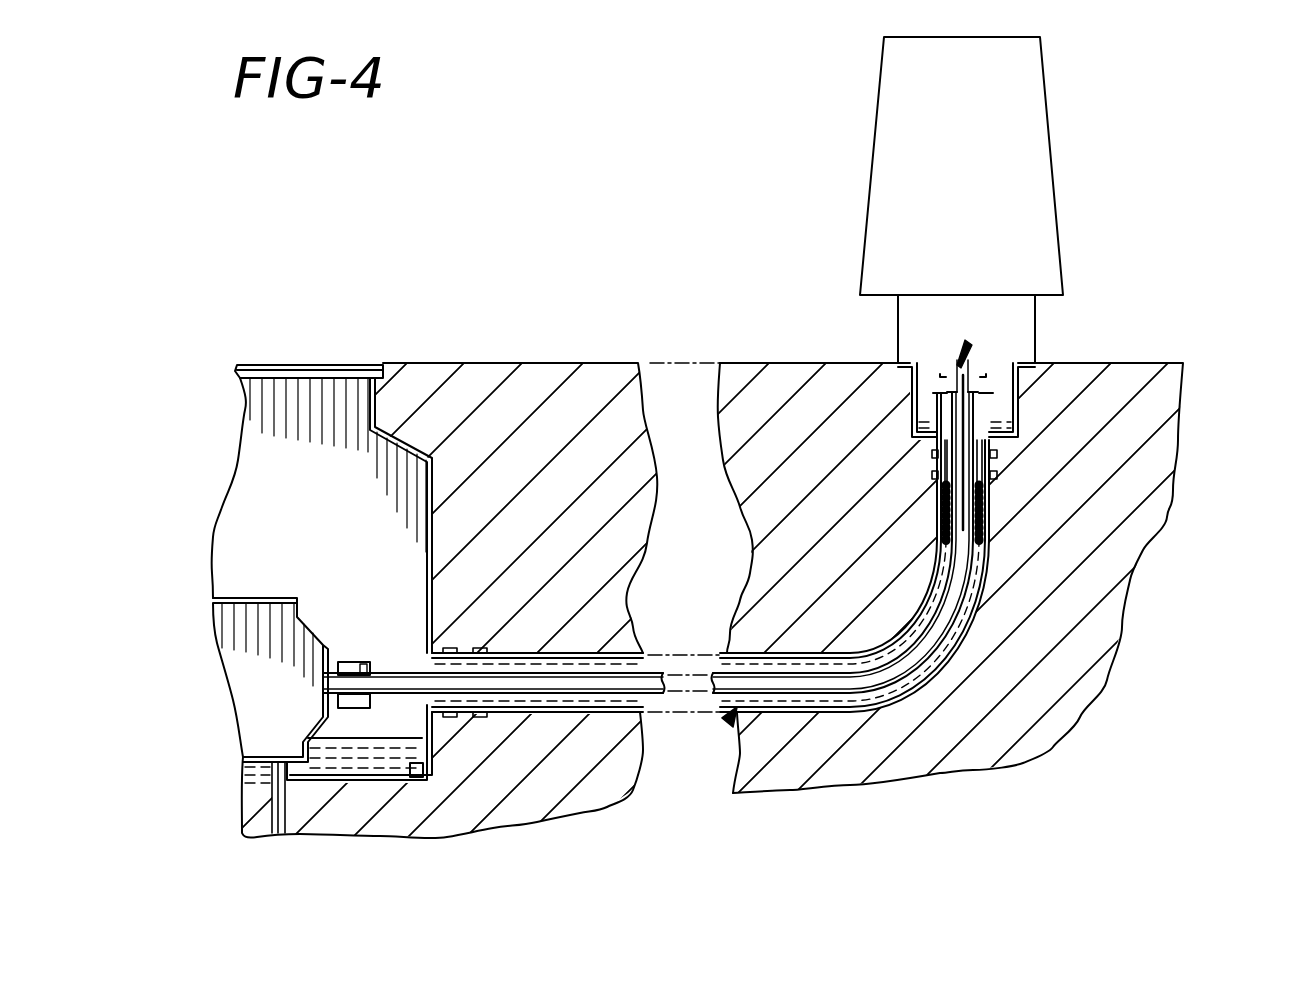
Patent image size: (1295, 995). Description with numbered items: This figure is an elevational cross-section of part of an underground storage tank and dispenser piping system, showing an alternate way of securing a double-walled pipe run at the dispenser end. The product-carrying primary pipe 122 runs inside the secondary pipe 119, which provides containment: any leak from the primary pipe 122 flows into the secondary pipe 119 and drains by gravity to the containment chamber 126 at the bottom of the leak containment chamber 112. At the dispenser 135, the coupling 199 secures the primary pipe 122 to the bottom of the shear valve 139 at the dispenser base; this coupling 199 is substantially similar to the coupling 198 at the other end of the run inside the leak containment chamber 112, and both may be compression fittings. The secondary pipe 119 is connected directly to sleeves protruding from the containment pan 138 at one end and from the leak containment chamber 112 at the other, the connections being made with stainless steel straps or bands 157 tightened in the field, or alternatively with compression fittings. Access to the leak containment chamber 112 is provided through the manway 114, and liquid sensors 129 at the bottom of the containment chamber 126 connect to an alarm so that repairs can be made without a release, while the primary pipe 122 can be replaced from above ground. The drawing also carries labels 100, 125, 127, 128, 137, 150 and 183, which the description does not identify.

The tube assembly 100 is at (836, 720).
The leak containment chamber 112 is at (427, 462).
The manway 114 is at (313, 362).
The secondary pipe 119 is at (1017, 550).
The primary pipe 122 is at (943, 660).
The fitting 125 is at (341, 660).
The containment chamber 126 is at (380, 763).
The fluid flow arrow 127 is at (728, 728).
The body block 128 is at (598, 363).
The liquid sensors 129 is at (427, 777).
The dispenser 135 is at (1035, 155).
The housing 137 is at (233, 598).
The containment pan 138 is at (905, 385).
The shear valve 139 is at (968, 343).
The fluid 150 is at (345, 740).
The stainless steel straps or bands 157 is at (483, 717).
The drain channel 183 is at (243, 790).
The coupling 198 is at (358, 662).
The coupling 199 is at (928, 373).